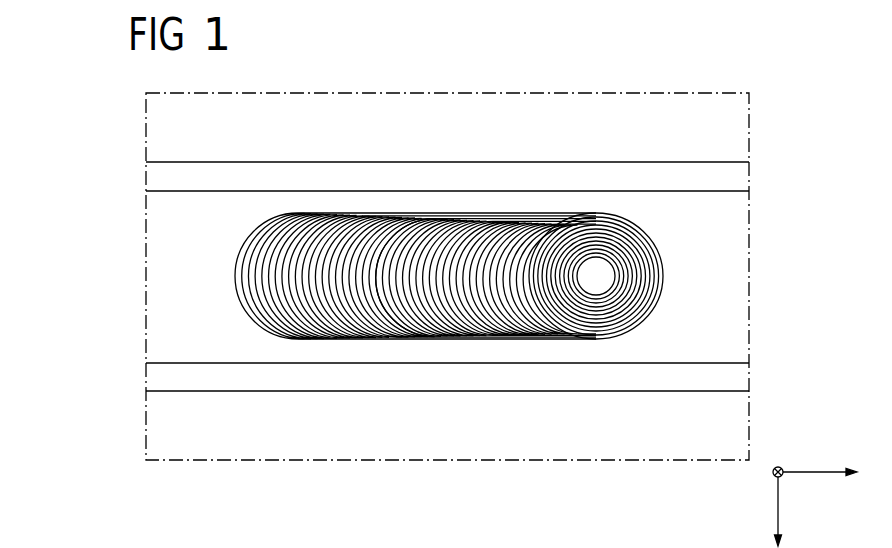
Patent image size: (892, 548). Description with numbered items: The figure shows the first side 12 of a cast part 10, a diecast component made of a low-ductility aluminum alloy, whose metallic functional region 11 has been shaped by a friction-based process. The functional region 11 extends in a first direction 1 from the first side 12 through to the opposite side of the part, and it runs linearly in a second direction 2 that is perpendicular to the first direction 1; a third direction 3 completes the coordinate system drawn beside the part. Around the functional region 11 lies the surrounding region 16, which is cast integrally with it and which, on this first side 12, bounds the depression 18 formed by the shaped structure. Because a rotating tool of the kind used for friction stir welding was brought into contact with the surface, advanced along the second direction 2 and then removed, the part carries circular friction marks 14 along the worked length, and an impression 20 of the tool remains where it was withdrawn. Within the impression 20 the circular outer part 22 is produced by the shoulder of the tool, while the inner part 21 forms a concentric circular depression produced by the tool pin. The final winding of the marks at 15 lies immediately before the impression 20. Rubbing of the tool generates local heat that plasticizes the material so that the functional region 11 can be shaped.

The cast part 10 is at (637, 82).
The functional region 11 is at (220, 277).
The first side 12 is at (477, 138).
The friction marks 14 is at (290, 300).
The last winding turn 15 is at (567, 318).
The surrounding region 16 is at (710, 288).
The depression 18 is at (435, 318).
The impression 20 is at (593, 331).
The inner part of the impression 21 is at (598, 273).
The outer part of the impression 22 is at (618, 308).
The first direction 1 is at (779, 466).
The second direction 2 is at (826, 471).
The third direction 3 is at (778, 516).